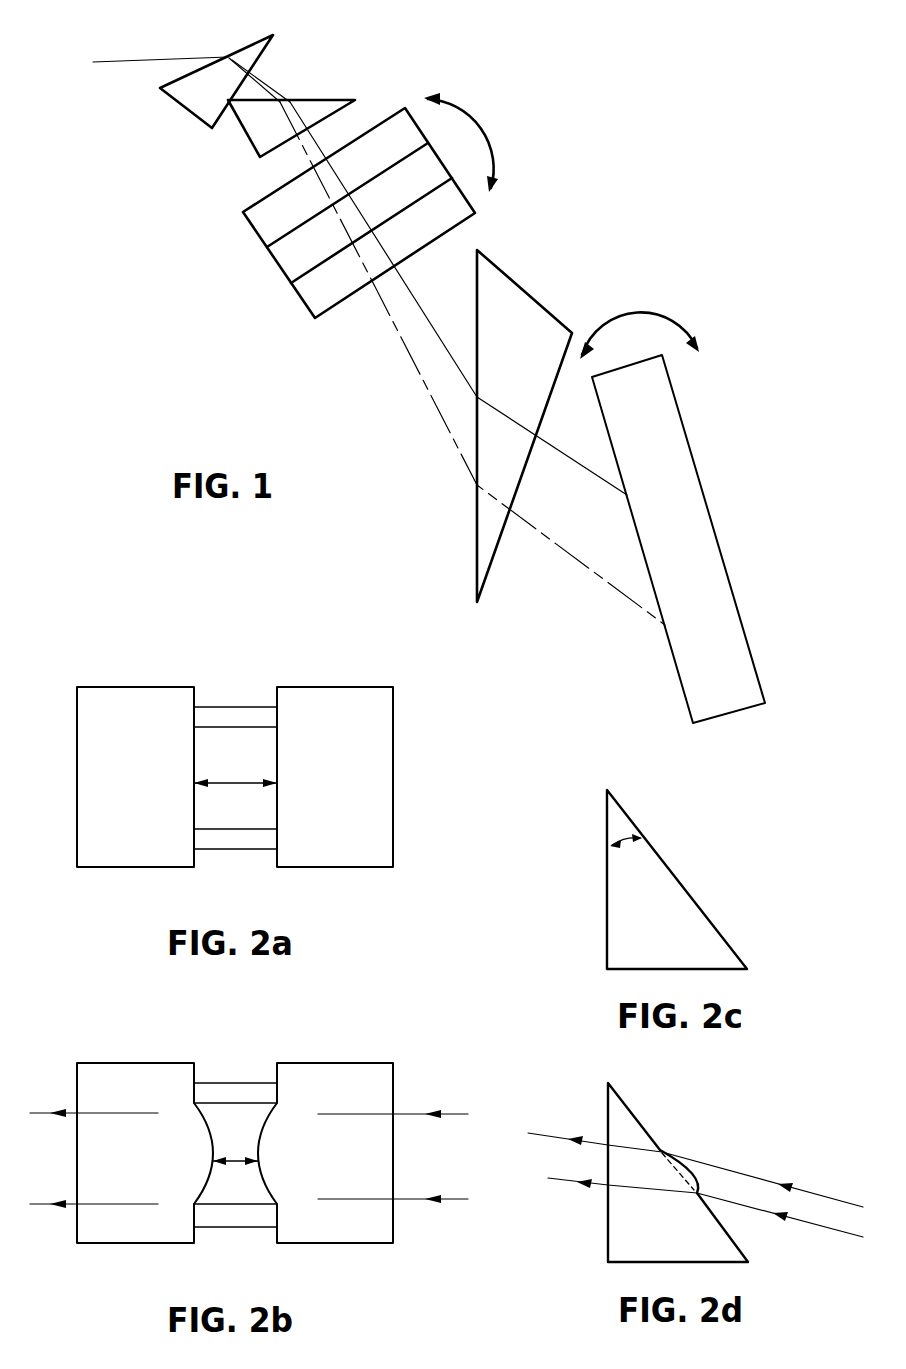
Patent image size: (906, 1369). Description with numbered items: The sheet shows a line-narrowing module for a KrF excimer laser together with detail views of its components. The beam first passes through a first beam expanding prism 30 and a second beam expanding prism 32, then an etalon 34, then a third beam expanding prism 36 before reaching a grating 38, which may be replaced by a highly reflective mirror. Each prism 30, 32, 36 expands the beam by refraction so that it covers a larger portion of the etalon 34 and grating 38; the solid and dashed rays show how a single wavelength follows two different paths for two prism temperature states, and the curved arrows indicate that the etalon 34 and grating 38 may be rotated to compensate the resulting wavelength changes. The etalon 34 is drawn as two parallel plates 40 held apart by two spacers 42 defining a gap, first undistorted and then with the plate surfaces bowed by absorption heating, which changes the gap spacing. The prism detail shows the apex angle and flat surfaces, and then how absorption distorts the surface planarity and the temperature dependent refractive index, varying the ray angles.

In FIG. 1, the first beam expanding prism 30 is at (245, 48).
In FIG. 2C, the first beam expanding prism 30 is at (694, 879).
In FIG. 2D, the first beam expanding prism 30 is at (681, 1167).
In FIG. 1, the second beam expanding prism 32 is at (333, 97).
In FIG. 2C, the second beam expanding prism 32 is at (694, 879).
In FIG. 2D, the second beam expanding prism 32 is at (681, 1167).
In FIG. 1, the etalon 34 is at (283, 270).
In FIG. 2A, the etalon 34 is at (235, 770).
In FIG. 2B, the etalon 34 is at (333, 1062).
In FIG. 1, the third beam expanding prism 36 is at (525, 290).
In FIG. 2C, the third beam expanding prism 36 is at (705, 873).
In FIG. 2D, the third beam expanding prism 36 is at (630, 1102).
In FIG. 1, the grating 38 is at (684, 422).
In FIG. 2A, the parallel plates 40 is at (77, 783).
In FIG. 2A, the spacers 42 is at (227, 705).